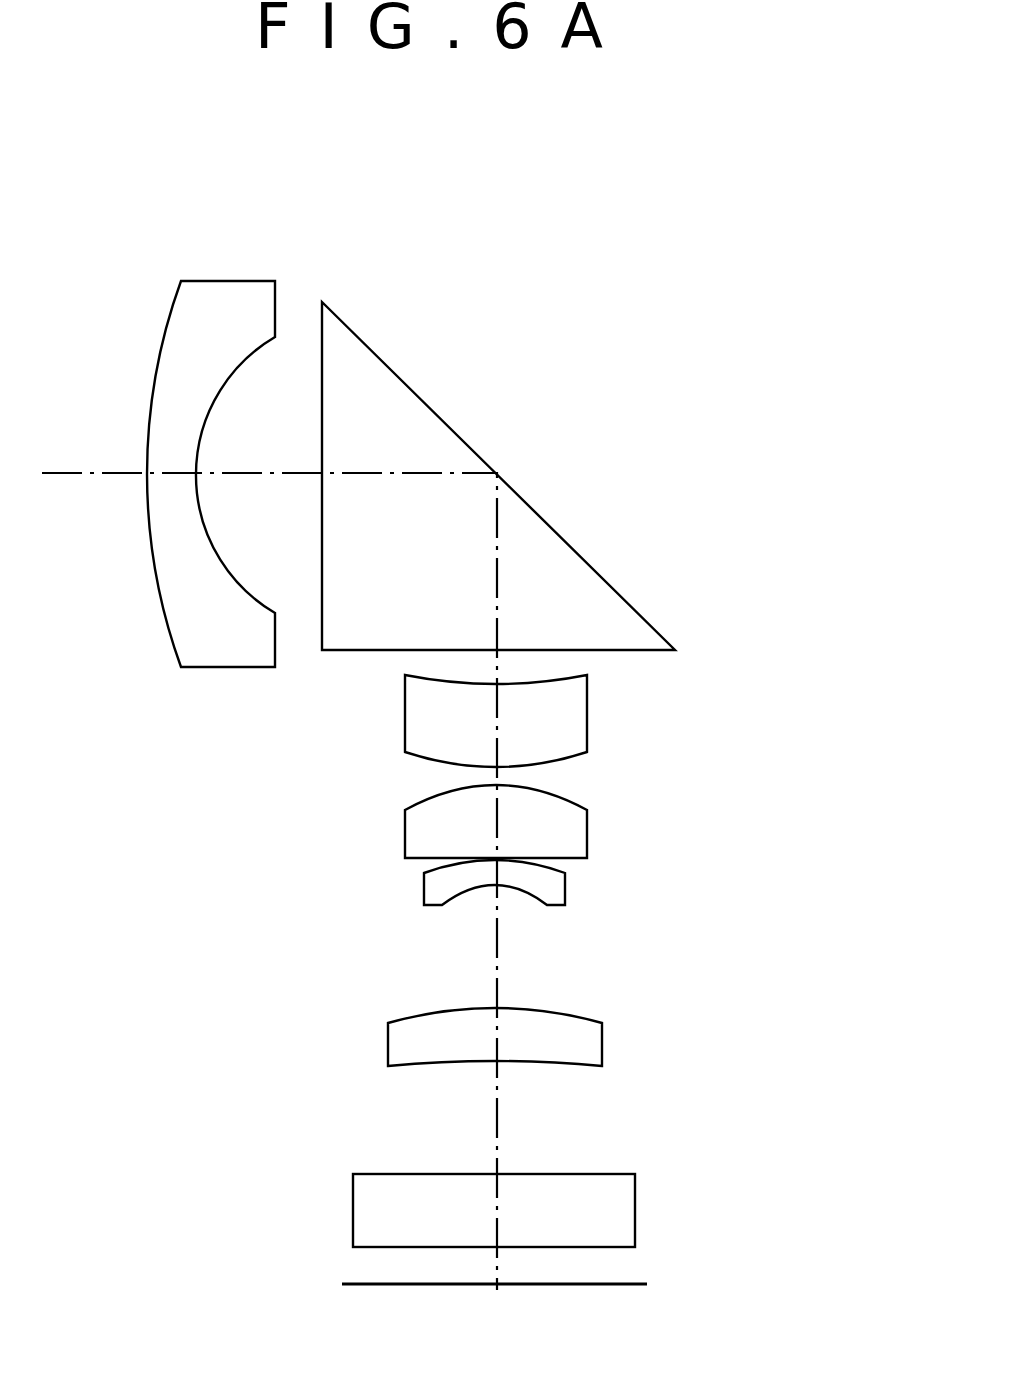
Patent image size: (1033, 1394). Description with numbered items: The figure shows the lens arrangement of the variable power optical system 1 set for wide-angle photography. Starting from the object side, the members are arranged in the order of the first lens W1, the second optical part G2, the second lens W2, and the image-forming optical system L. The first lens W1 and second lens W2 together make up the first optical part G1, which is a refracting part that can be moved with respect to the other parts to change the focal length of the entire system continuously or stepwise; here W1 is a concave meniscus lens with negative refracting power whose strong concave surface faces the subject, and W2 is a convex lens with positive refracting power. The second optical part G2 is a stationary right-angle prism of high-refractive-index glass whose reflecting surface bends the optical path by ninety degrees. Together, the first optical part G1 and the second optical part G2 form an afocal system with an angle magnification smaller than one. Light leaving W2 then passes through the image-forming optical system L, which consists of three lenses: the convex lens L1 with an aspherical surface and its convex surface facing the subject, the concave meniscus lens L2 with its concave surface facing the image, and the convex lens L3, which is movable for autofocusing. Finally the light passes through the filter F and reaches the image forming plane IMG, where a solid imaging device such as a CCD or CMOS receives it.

The variable power optical system 1 is at (652, 316).
The first optical part G1 is at (282, 788).
The first lens W1 is at (212, 638).
The second lens W2 is at (420, 723).
The second optical part G2 is at (555, 575).
The image-forming optical system L is at (348, 783).
The convex lens L1 is at (560, 832).
The concave meniscus lens L2 is at (552, 890).
The convex lens L3 is at (587, 1040).
The filter F is at (635, 1208).
The image forming plane IMG is at (630, 1282).